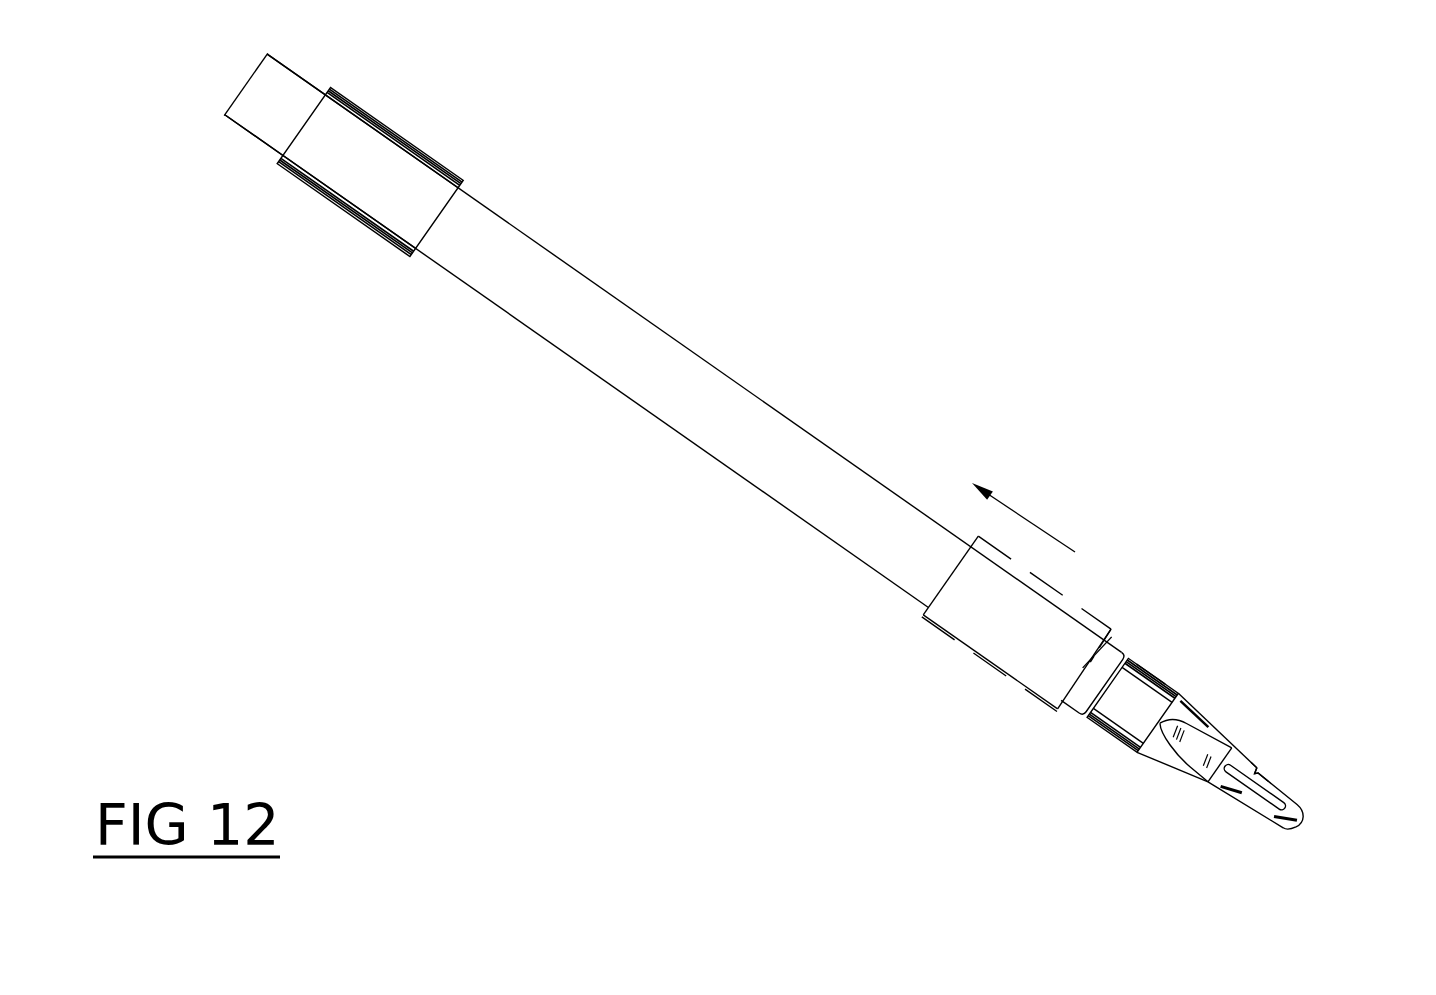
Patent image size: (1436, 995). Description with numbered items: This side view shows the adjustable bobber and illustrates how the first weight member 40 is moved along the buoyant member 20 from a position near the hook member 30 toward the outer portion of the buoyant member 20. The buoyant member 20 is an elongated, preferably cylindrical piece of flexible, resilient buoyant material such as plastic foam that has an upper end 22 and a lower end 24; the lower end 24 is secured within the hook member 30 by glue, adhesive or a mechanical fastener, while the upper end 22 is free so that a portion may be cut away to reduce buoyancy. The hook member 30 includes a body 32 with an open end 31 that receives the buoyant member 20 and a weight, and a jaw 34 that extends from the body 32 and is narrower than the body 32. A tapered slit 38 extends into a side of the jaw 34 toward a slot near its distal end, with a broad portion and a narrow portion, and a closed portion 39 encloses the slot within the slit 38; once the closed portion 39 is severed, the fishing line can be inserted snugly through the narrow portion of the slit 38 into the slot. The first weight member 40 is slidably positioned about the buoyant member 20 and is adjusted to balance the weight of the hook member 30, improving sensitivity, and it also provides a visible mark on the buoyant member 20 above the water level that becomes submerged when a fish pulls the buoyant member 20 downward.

The buoyant member 20 is at (590, 242).
The upper end 22 is at (245, 127).
The lower end 24 is at (925, 530).
The hook member 30 is at (1154, 781).
The open end 31 is at (1153, 668).
The body 32 is at (1108, 733).
The jaw 34 is at (1250, 805).
The slit 38 is at (1257, 769).
The closed portion 39 is at (1258, 771).
The first weight member 40 is at (398, 130).